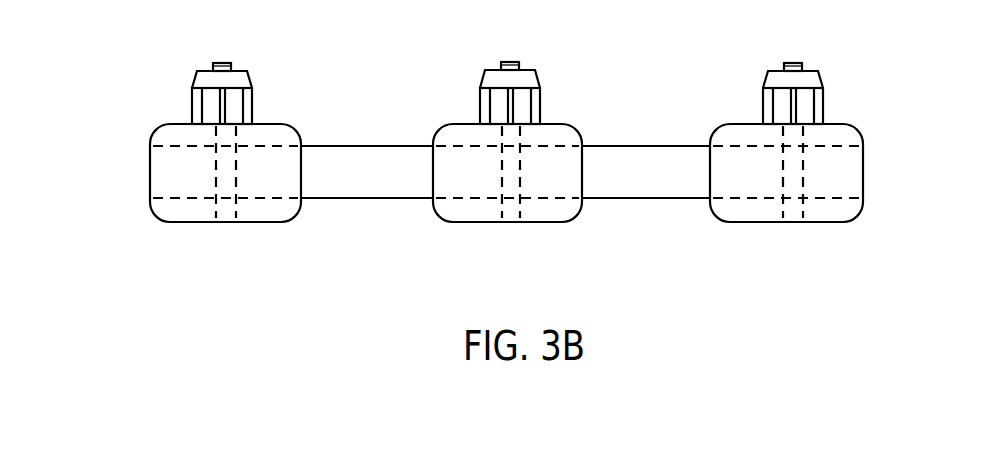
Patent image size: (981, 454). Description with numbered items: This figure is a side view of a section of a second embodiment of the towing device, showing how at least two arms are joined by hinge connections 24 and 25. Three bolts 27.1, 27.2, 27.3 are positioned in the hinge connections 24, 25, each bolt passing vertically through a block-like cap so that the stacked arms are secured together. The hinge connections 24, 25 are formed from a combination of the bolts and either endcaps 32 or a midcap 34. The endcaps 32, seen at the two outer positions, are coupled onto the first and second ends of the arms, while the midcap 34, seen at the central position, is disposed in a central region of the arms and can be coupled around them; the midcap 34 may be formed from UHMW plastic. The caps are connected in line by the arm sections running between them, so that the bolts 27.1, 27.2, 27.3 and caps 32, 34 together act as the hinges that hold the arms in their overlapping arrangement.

The hinge connection 24 is at (138, 115).
The hinge connection 25 is at (453, 78).
The endcap 32 is at (170, 173).
The midcap 34 is at (450, 177).
The bolt 27.1 is at (227, 175).
The bolt 27.2 is at (512, 172).
The bolt 27.3 is at (793, 173).